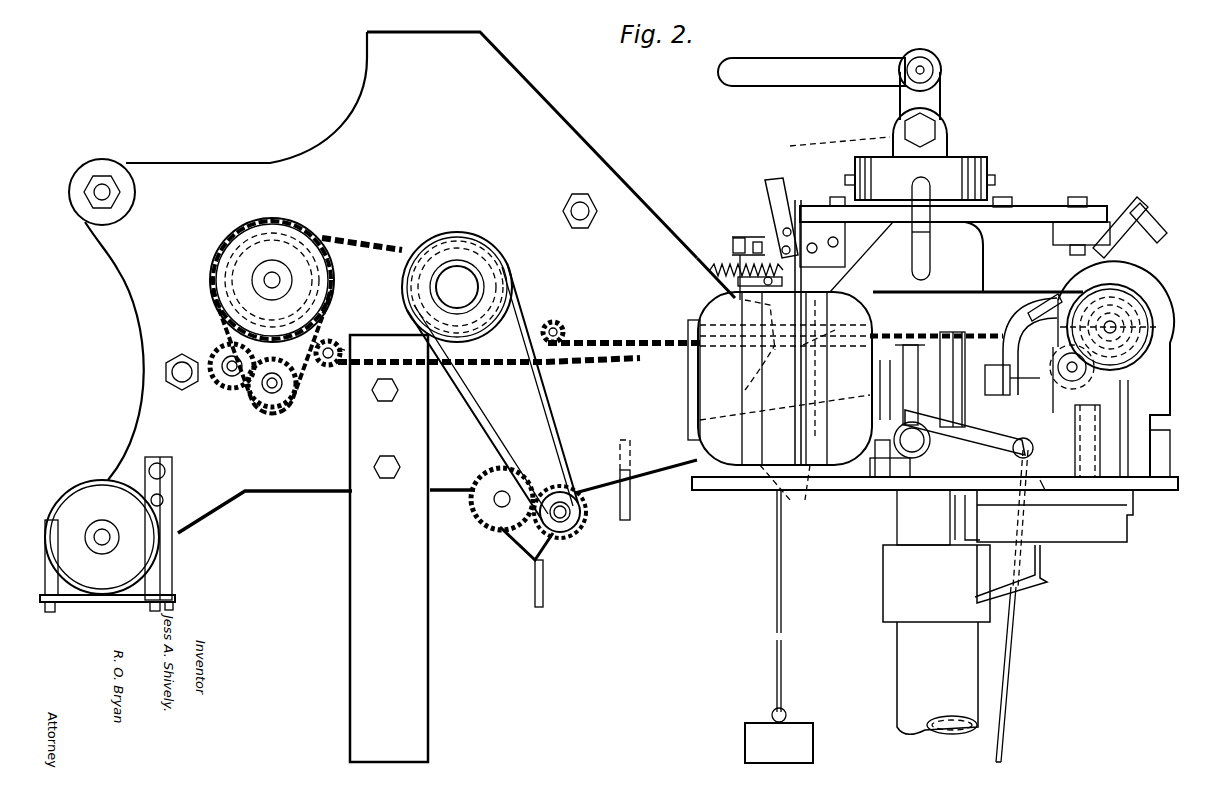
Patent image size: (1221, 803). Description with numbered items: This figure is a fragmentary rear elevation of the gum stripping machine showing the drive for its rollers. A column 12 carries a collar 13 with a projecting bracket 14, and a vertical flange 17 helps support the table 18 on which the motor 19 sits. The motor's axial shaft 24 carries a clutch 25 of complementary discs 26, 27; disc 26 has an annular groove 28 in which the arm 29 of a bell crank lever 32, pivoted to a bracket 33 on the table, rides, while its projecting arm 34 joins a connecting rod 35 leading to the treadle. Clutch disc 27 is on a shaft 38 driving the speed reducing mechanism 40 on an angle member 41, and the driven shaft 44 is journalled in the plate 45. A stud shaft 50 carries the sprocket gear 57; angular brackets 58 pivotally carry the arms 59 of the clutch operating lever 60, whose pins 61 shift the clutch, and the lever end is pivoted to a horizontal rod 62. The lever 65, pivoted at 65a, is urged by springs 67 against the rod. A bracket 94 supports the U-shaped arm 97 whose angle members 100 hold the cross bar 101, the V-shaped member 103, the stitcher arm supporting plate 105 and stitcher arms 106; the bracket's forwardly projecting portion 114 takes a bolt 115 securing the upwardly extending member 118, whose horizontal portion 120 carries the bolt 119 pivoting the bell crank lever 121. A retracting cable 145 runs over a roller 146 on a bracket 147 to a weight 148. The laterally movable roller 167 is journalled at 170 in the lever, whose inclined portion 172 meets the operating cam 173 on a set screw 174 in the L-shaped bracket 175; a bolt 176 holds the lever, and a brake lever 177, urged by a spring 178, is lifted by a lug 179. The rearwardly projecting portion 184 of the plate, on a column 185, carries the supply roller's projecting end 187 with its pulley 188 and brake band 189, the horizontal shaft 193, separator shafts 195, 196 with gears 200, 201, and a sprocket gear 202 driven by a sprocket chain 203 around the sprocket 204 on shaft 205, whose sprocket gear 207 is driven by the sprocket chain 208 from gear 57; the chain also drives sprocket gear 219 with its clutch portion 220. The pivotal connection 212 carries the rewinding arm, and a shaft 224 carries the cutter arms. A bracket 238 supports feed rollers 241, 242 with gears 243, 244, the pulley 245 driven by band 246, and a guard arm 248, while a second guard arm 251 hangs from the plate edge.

The column 12 is at (897, 677).
The collar 13 is at (883, 595).
The projecting bracket 14 is at (1050, 568).
The vertical flange 17 is at (1133, 522).
The table 18 is at (1165, 478).
The motor 19 is at (700, 428).
The axial shaft 24 is at (905, 375).
The clutch 25 is at (960, 334).
The clutch disc 26 is at (950, 334).
The clutch disc 27 is at (965, 340).
The annular groove 28 is at (905, 340).
The arm 29 is at (900, 393).
The bell crank lever 32 is at (890, 465).
The bracket 33 is at (928, 495).
The projecting arm 34 is at (995, 437).
The connecting rod 35 is at (1010, 655).
The shaft 38 is at (990, 372).
The speed reducing mechanism 40 is at (1152, 375).
The angle member 41 is at (1152, 440).
The driven shaft 44 is at (1152, 327).
The plate 45 is at (1040, 482).
The stud shaft 50 is at (1092, 378).
The sprocket gear 57 is at (1094, 367).
The angular brackets 58 is at (1045, 300).
The arms 59 is at (1040, 310).
The clutch operating lever 60 is at (877, 458).
The pins 61 is at (1035, 310).
The horizontal rod 62 is at (760, 492).
The lever 65 is at (798, 200).
The pivot 65a is at (835, 370).
The springs 67 is at (710, 283).
The bracket 94 is at (980, 253).
The arm 97 is at (960, 160).
The angle members 100 is at (1018, 207).
The cross bar 101 is at (1040, 213).
The V-shaped member 103 is at (1108, 225).
The stitcher arm supporting plate 105 is at (1140, 207).
The stitcher arms 106 is at (1155, 222).
The forwardly projecting portion 114 is at (900, 133).
The bolt 115 is at (942, 125).
The upwardly extending member 118 is at (936, 102).
The bolt 119 is at (925, 72).
The horizontal portion 120 is at (918, 52).
The bell crank lever 121 is at (800, 62).
The retracting cable 145 is at (775, 568).
The roller 146 is at (745, 370).
The bracket 147 is at (748, 392).
The weight 148 is at (794, 722).
The laterally movable roller 167 is at (835, 320).
The journal 170 is at (846, 257).
The upwardly inclined portion 172 is at (766, 192).
The operating cam 173 is at (758, 242).
The set screw 174 is at (732, 240).
The bracket 175 is at (745, 234).
The bolt 176 is at (745, 303).
The brake lever 177 is at (736, 286).
The spring 178 is at (735, 296).
The lug 179 is at (740, 258).
The rearwardly projecting portion 184 is at (520, 93).
The column 185 is at (430, 640).
The projecting end 187 is at (102, 546).
The pulley 188 is at (85, 490).
The brake band 189 is at (56, 606).
The horizontal shaft 193 is at (182, 384).
The separator shaft 195 is at (230, 376).
The separator shaft 196 is at (266, 398).
The gear 200 is at (210, 356).
The gear 201 is at (290, 390).
The sprocket gear 202 is at (305, 366).
The sprocket chain 203 is at (325, 322).
The sprocket 204 is at (264, 220).
The shaft 205 is at (278, 272).
The sprocket gear 207 is at (230, 261).
The sprocket chain 208 is at (368, 245).
The pivotal connection 212 is at (102, 185).
The sprocket gear 219 is at (420, 262).
The clutch portion 220 is at (420, 283).
The shaft 224 is at (582, 208).
The bracket 238 is at (528, 551).
The feed roller 241 is at (496, 500).
The feed roller 242 is at (580, 525).
The gear 243 is at (497, 520).
The gear 244 is at (570, 540).
The pulley 245 is at (530, 560).
The band 246 is at (553, 397).
The guard arm 248 is at (545, 595).
The guard arm 251 is at (632, 497).